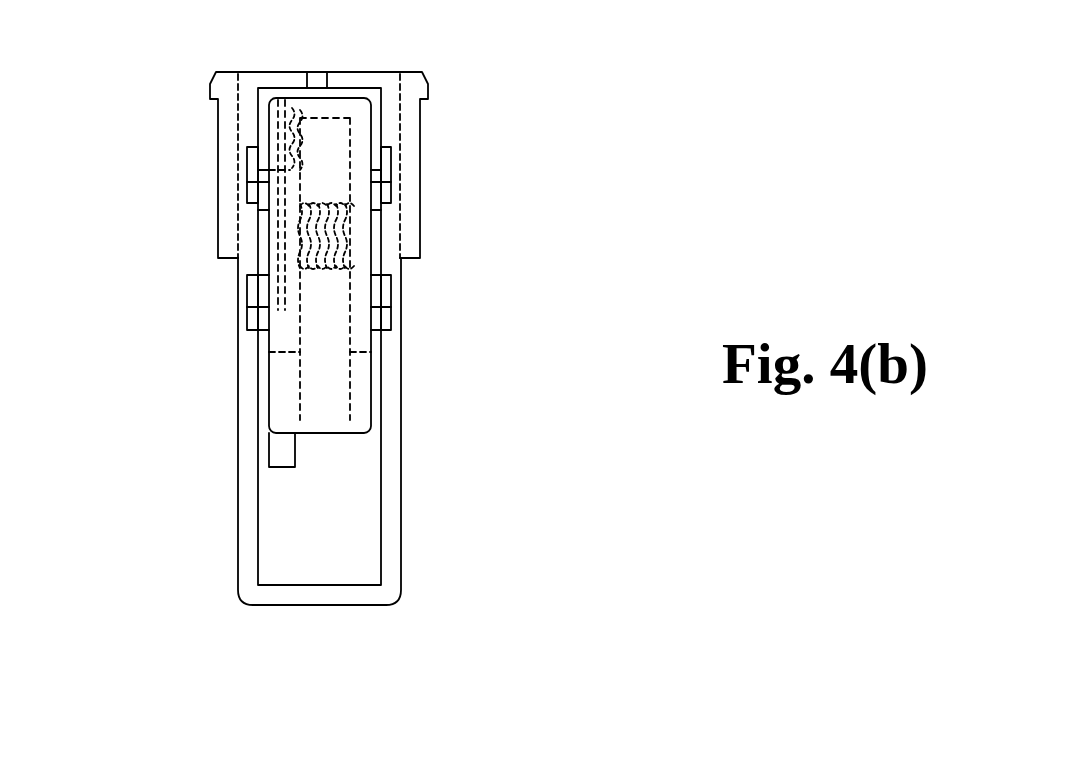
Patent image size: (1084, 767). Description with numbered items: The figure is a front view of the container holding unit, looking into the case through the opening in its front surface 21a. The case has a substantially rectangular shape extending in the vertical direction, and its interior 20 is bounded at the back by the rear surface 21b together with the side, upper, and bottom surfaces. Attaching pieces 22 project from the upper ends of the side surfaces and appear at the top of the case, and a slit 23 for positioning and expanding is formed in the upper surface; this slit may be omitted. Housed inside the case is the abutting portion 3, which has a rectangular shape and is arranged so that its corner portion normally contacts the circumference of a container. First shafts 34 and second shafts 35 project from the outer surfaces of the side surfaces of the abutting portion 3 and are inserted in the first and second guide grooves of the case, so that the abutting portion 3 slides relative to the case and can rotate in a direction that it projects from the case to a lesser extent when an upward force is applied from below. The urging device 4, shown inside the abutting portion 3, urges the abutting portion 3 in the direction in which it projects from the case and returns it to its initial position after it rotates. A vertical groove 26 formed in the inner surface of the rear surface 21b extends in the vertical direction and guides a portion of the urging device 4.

The abutting portion 3 is at (338, 434).
The urging device 4 is at (300, 265).
The interior 20 is at (312, 563).
The front surface 21a is at (393, 571).
The rear surface 21b is at (374, 517).
The attaching pieces 22 is at (218, 163).
The slit 23 is at (318, 72).
The vertical groove 26 is at (282, 449).
The first shafts 34 is at (246, 297).
The second shafts 35 is at (245, 191).